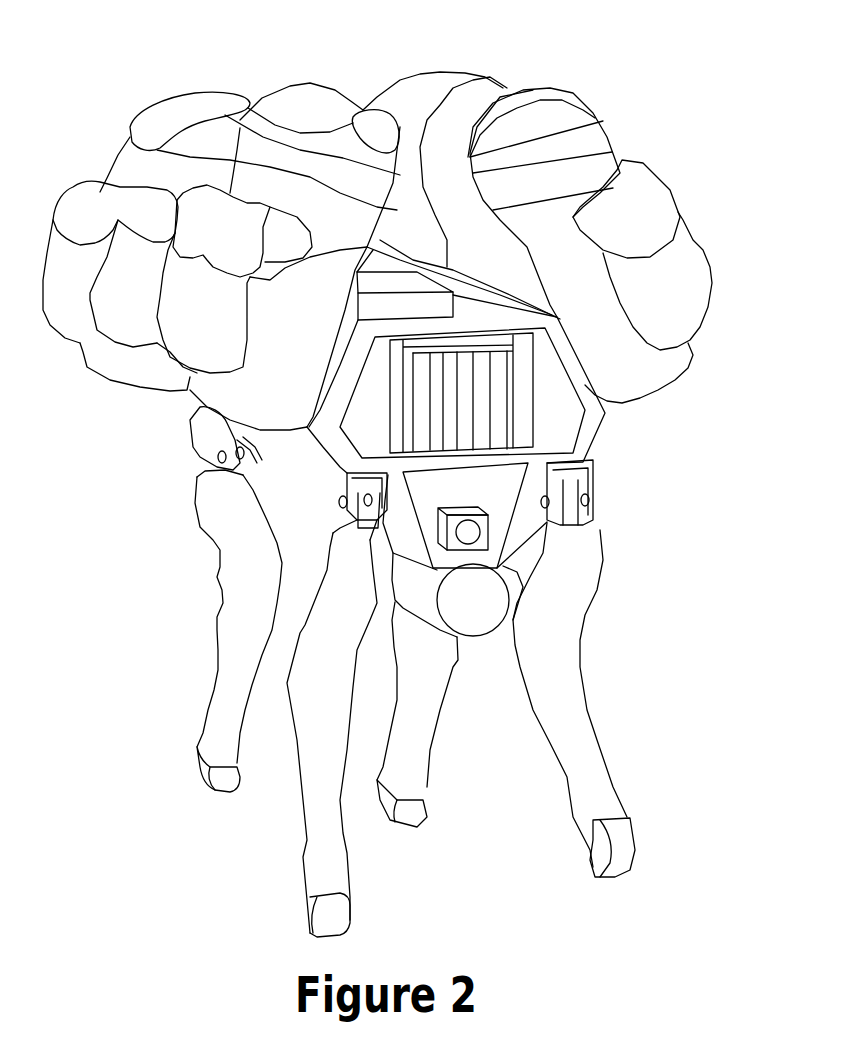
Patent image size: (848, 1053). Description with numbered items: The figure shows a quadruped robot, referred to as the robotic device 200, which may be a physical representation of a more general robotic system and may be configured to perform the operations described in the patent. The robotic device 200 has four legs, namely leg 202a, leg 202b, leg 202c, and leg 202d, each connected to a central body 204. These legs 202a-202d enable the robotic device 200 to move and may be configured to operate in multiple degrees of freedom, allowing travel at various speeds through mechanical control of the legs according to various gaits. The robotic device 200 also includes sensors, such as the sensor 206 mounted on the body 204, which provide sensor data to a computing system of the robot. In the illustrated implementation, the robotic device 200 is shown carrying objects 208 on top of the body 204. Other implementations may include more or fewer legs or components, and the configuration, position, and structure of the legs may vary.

The robotic device 200 is at (587, 82).
The leg 202a is at (297, 880).
The leg 202b is at (210, 703).
The leg 202c is at (430, 767).
The leg 202d is at (587, 730).
The body 204 is at (605, 427).
The sensor 206 is at (490, 535).
The objects 208 is at (680, 197).